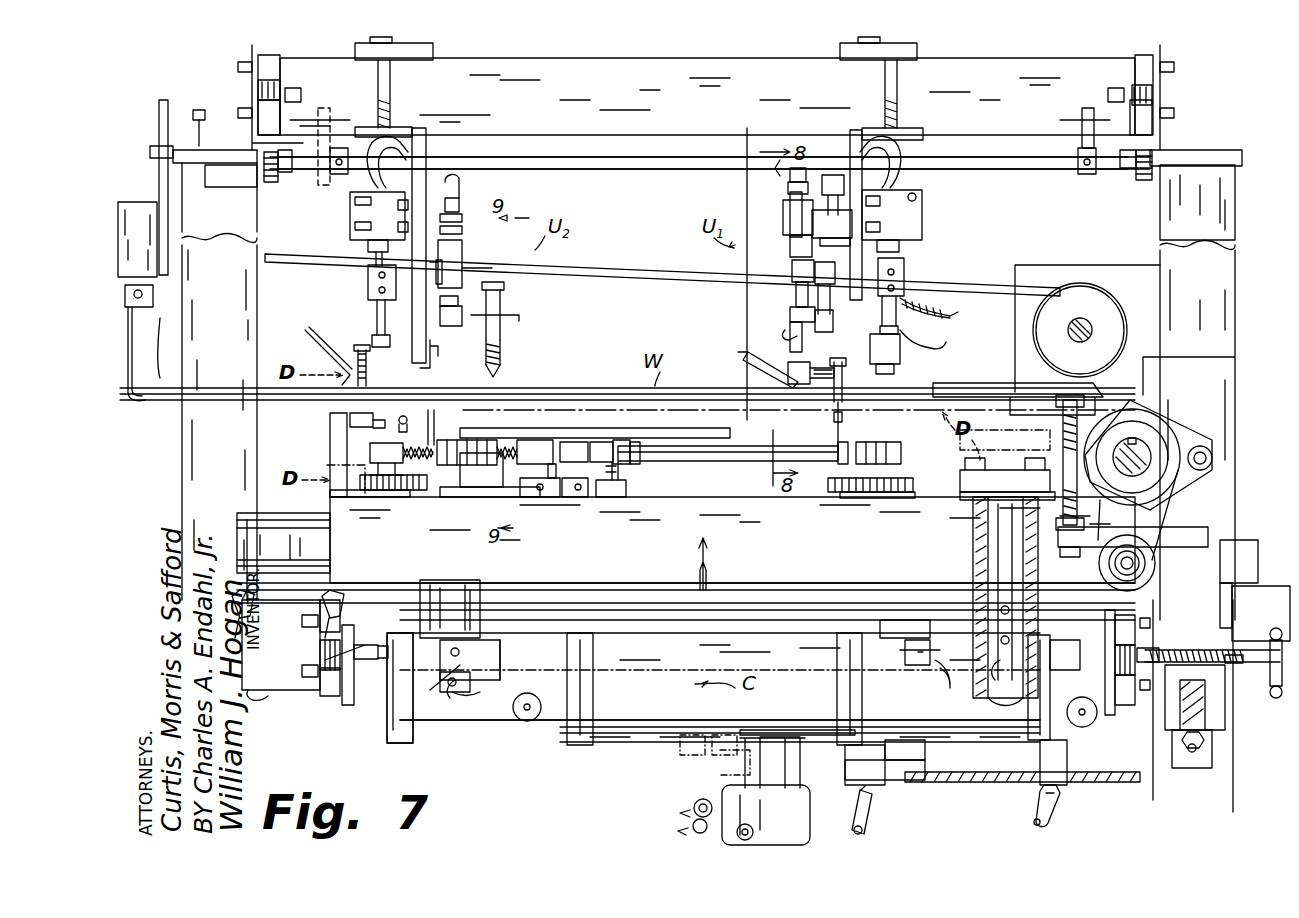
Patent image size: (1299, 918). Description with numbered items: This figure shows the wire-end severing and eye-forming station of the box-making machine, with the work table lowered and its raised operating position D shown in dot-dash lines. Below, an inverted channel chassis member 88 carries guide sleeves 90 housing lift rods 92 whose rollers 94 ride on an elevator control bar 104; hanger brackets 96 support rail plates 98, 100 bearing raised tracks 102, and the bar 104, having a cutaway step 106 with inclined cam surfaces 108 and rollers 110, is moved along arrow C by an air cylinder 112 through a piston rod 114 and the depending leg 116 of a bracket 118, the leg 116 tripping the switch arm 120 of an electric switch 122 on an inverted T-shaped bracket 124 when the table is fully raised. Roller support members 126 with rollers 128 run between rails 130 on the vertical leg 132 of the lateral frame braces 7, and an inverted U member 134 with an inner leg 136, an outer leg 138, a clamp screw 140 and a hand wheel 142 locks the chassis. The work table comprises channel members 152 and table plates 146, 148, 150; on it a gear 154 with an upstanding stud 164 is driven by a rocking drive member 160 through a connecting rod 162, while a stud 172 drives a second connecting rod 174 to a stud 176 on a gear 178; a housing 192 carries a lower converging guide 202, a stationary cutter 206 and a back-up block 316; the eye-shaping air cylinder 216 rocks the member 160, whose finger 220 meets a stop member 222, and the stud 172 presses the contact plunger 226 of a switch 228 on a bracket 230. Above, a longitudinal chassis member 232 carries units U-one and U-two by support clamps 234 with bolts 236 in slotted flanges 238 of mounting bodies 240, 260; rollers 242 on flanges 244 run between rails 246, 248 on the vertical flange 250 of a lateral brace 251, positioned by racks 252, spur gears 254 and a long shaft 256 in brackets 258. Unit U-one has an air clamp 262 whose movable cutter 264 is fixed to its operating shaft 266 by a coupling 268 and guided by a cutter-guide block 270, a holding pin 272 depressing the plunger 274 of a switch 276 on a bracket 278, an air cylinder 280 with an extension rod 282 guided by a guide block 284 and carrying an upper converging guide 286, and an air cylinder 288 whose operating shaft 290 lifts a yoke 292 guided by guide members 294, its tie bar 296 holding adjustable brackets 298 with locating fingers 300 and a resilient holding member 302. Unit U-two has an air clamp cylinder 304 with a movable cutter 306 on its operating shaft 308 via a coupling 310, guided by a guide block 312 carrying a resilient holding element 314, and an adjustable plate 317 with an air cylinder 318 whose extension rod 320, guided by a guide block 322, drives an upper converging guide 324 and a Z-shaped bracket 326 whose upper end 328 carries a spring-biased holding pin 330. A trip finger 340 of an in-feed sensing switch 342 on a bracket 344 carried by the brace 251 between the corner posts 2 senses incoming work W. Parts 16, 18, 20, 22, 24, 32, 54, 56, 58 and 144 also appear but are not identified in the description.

The corner posts 2 is at (198, 238).
The main lateral frame brace 7 is at (1195, 600).
The guide rail bracket 16 is at (1100, 395).
The drive wheel 18 is at (1153, 432).
The wheel hub 20 is at (1137, 454).
The wheel bracket 22 is at (1187, 468).
The pulley 24 is at (1153, 563).
The rail 32 is at (624, 273).
The wheel 54 is at (1100, 325).
The wheel shaft 56 is at (1090, 332).
The support post 58 is at (1230, 298).
The inverted channel chassis member 88 is at (695, 612).
The guide sleeves 90 is at (480, 603).
The lift rods 92 is at (420, 745).
The rollers 94 is at (460, 676).
The hanger brackets 96 is at (400, 743).
The rail plate 98 is at (560, 730).
The rail plate 100 is at (885, 742).
The raised track portion 102 is at (500, 735).
The elevator control bar 104 is at (620, 720).
The cutaway horizontal step 106 is at (360, 697).
The inclined cam surface 108 is at (388, 685).
The rollers 110 is at (527, 692).
The air cylinder 112 is at (995, 780).
The piston rod 114 is at (882, 772).
The depending leg 116 is at (722, 754).
The bracket 118 is at (690, 728).
The switch arm 120 is at (706, 807).
The electric switch 122 is at (758, 826).
The inverted T-shaped bracket 124 is at (782, 737).
The roller support member 126 is at (352, 638).
The rollers 128 is at (327, 652).
The rails 130 is at (335, 628).
The vertical leg 132 is at (327, 678).
The inverted U member 134 is at (1220, 571).
The inner leg 136 is at (1090, 604).
The outer leg 138 is at (1255, 608).
The clamp screw 140 is at (1258, 650).
The hand wheel 142 is at (1280, 692).
The block 144 is at (995, 532).
The table plate element 146 is at (402, 514).
The table plate element 148 is at (852, 494).
The table plate element 150 is at (990, 530).
The channel members 152 is at (698, 515).
The gear 154 is at (377, 492).
The rocking drive member 160 is at (610, 494).
The connecting rod 162 is at (480, 444).
The upstanding stud 164 is at (379, 454).
The stud 172 is at (589, 442).
The second connecting rod 174 is at (663, 462).
The short stud 176 is at (957, 496).
The gear 178 is at (824, 486).
The housing 192 is at (364, 437).
The converging guide 202 is at (442, 444).
The stationary cutter 206 is at (353, 423).
The air cylinder 216 is at (320, 512).
The outwardly projecting finger 220 is at (550, 514).
The stop member 222 is at (558, 486).
The contact plunger 226 is at (537, 442).
The electric switch 228 is at (458, 502).
The bracket 230 is at (448, 485).
The longitudinal chassis member 232 is at (632, 108).
The support clamp 234 is at (420, 58).
The bolts 236 is at (390, 96).
The slotted flange 238 is at (395, 132).
The mounting body 240 is at (422, 148).
The rollers 242 is at (301, 98).
The flanges 244 is at (275, 92).
The rail 246 is at (252, 65).
The rail 248 is at (273, 131).
The vertical flange 250 is at (252, 108).
The lateral brace 251 is at (230, 165).
The racks 252 is at (268, 161).
The spur gears 254 is at (278, 175).
The long shaft 256 is at (308, 162).
The brackets 258 is at (325, 150).
The mounting body 260 is at (855, 142).
The air clamp 262 is at (917, 195).
The movable cutter 264 is at (900, 362).
The operating shaft 266 is at (899, 242).
The coupling 268 is at (903, 282).
The cutter-guide block 270 is at (910, 344).
The upper holding pin 272 is at (892, 271).
The plunger 274 is at (900, 310).
The electric switch 276 is at (940, 320).
The bracket 278 is at (865, 230).
The air cylinder 280 is at (792, 280).
The extension rod 282 is at (808, 308).
The guide block 284 is at (805, 328).
The upper converging guide 286 is at (802, 330).
The air cylinder 288 is at (782, 215).
The operating shaft 290 is at (785, 184).
The yoke 292 is at (777, 182).
The guide members 294 is at (790, 252).
The tie bar 296 is at (787, 382).
The adjustable brackets 298 is at (832, 386).
The locating fingers 300 is at (836, 414).
The resilient holding member 302 is at (748, 354).
The air clamp cylinder 304 is at (350, 222).
The movable cutter 306 is at (387, 292).
The operating shaft 308 is at (370, 256).
The coupling 310 is at (372, 276).
The guide block 312 is at (390, 316).
The resilient holding element 314 is at (356, 383).
The back-up block 316 is at (346, 400).
The adjustable plate 317 is at (458, 280).
The air cylinder 318 is at (463, 261).
The extension rod 320 is at (491, 300).
The guide block 322 is at (461, 336).
The converging guide 324 is at (440, 356).
The Z-shaped bracket 326 is at (501, 354).
The upper end 328 is at (481, 318).
The spring-biased pointed holding pin 330 is at (493, 373).
The trip finger 340 is at (158, 394).
The in-feed sensing trip switch 342 is at (146, 202).
The bracket 344 is at (160, 106).